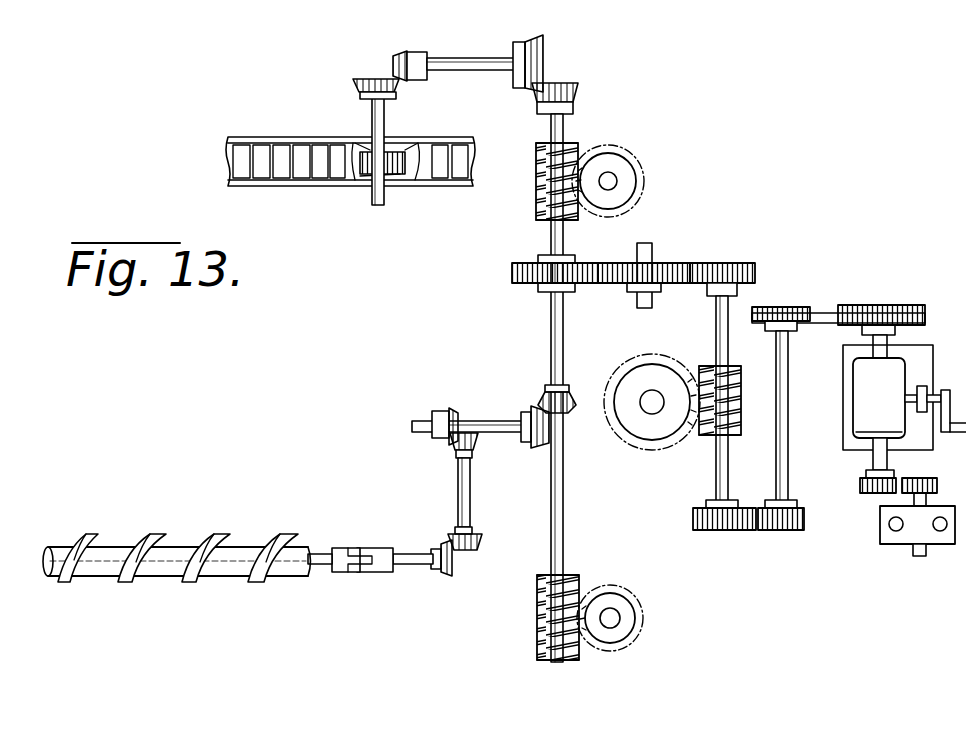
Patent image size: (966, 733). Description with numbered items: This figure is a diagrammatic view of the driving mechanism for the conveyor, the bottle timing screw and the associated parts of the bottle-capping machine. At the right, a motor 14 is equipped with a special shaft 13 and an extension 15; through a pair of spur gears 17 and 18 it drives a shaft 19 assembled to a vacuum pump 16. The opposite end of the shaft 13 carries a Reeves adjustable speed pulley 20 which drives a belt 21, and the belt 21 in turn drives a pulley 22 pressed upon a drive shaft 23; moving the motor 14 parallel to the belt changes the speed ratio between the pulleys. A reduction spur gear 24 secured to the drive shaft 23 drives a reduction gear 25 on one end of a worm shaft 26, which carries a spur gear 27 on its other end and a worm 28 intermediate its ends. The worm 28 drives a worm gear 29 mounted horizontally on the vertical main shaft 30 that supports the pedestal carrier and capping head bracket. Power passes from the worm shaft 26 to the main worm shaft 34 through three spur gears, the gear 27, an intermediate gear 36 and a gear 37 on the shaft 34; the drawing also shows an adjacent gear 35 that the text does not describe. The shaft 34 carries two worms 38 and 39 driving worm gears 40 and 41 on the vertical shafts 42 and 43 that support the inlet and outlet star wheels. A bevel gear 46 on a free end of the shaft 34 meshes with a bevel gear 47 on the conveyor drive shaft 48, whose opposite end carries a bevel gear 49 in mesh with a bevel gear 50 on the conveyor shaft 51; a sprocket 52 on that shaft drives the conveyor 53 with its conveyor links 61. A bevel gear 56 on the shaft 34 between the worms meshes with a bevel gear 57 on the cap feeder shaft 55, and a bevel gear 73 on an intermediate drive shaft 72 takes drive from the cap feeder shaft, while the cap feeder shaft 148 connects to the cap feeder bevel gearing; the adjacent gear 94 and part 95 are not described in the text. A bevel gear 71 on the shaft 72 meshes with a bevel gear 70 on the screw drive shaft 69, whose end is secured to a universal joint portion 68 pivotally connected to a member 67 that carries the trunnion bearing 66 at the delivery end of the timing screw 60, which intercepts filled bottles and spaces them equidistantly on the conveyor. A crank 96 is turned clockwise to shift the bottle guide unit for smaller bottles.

The special shaft 13 is at (887, 340).
The motor 14 is at (884, 384).
The extension 15 is at (872, 462).
The vacuum pump 16 is at (950, 544).
The spur gear 17 is at (868, 494).
The spur gear 18 is at (938, 484).
The shaft 19 is at (918, 556).
The adjustable speed pulley 20 is at (896, 304).
The belt 21 is at (822, 313).
The pulley 22 is at (782, 306).
The drive shaft 23 is at (788, 466).
The reduction spur gear 24 is at (782, 531).
The reduction gear 25 is at (728, 531).
The worm shaft 26 is at (722, 462).
The spur gear 27 is at (728, 300).
The worm 28 is at (740, 420).
The worm gear 29 is at (656, 444).
The vertical main shaft 30 is at (659, 409).
The main worm shaft 34 is at (563, 496).
The gear 35 is at (720, 262).
The spur gear 36 is at (672, 262).
The spur gear 37 is at (588, 262).
The worm 38 is at (535, 626).
The worm 39 is at (534, 186).
The worm gear 40 is at (596, 644).
The worm gear 41 is at (613, 147).
The vertical shaft 42 is at (612, 620).
The vertical shaft 43 is at (610, 182).
The bevel gear 46 is at (576, 92).
The bevel gear 47 is at (540, 40).
The conveyor drive shaft 48 is at (482, 60).
The bevel gear 49 is at (416, 52).
The bevel gear 50 is at (362, 80).
The conveyor shaft 51 is at (370, 118).
The sprocket 52 is at (372, 174).
The conveyor 53 is at (246, 182).
The cap feeder shaft 55 is at (496, 433).
The bevel gear 56 is at (572, 408).
The bevel gear 57 is at (536, 448).
The timing screw 60 is at (226, 578).
The conveyor links 61 is at (300, 176).
The trunnion bearing 66 is at (320, 564).
The universal joint member 67 is at (344, 572).
The universal joint portion 68 is at (376, 572).
The screw drive shaft 69 is at (410, 564).
The bevel gear 70 is at (447, 576).
The bevel gear 71 is at (470, 550).
The intermediate drive shaft 72 is at (470, 490).
The bevel gear 73 is at (455, 452).
The bevel gear 94 is at (440, 411).
The arm 95 is at (936, 402).
The crank 96 is at (948, 440).
The cap feeder shaft 148 is at (414, 432).